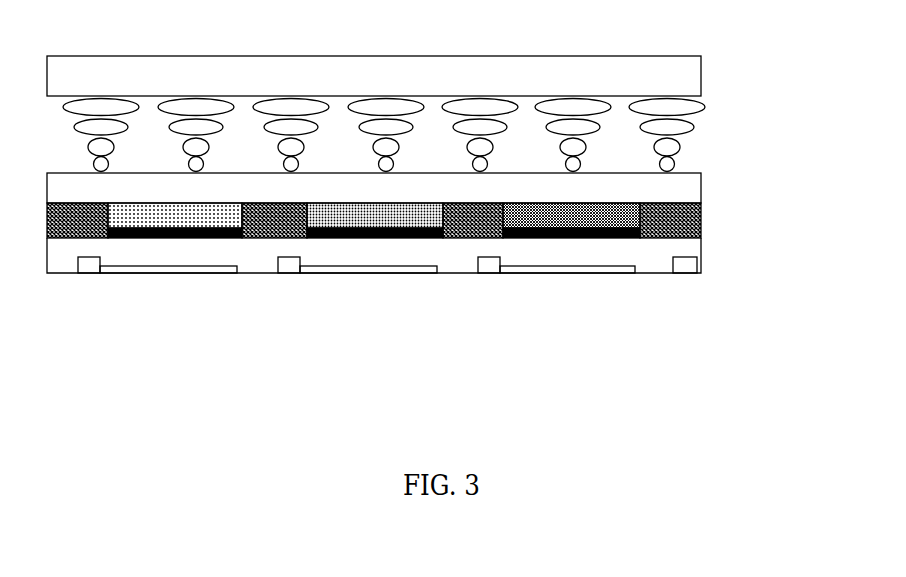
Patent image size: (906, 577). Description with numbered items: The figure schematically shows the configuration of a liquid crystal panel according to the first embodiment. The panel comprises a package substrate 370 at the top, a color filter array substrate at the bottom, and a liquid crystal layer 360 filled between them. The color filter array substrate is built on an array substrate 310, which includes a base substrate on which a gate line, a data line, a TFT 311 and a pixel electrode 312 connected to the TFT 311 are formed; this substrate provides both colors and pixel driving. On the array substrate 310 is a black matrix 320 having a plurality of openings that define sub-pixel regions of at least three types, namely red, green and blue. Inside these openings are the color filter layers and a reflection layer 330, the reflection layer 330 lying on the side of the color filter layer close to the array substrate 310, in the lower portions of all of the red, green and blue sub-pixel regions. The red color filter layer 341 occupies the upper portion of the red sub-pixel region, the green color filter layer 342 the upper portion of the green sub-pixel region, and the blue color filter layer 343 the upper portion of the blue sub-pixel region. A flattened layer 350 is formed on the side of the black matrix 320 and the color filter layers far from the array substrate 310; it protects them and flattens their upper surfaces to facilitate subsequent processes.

The array substrate 310 is at (707, 272).
The TFT 311 is at (92, 273).
The pixel electrode 312 is at (212, 275).
The black matrix 320 is at (73, 238).
The reflection layer 330 is at (197, 238).
The red color filter layer 341 is at (135, 238).
The green color filter layer 342 is at (352, 238).
The blue color filter layer 343 is at (547, 238).
The flattened layer 350 is at (705, 187).
The liquid crystal layer 360 is at (675, 150).
The package substrate 370 is at (673, 82).